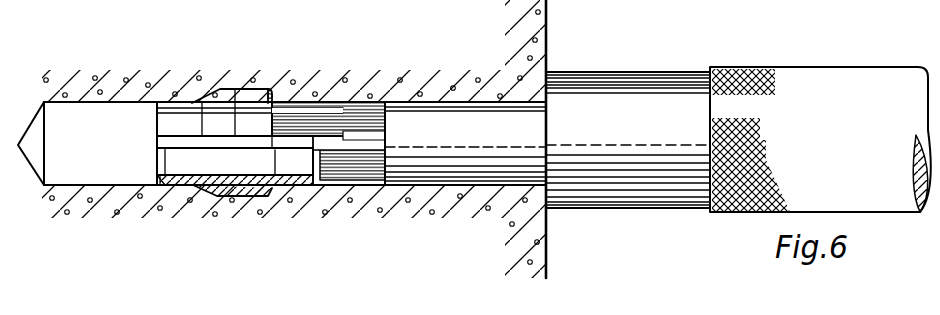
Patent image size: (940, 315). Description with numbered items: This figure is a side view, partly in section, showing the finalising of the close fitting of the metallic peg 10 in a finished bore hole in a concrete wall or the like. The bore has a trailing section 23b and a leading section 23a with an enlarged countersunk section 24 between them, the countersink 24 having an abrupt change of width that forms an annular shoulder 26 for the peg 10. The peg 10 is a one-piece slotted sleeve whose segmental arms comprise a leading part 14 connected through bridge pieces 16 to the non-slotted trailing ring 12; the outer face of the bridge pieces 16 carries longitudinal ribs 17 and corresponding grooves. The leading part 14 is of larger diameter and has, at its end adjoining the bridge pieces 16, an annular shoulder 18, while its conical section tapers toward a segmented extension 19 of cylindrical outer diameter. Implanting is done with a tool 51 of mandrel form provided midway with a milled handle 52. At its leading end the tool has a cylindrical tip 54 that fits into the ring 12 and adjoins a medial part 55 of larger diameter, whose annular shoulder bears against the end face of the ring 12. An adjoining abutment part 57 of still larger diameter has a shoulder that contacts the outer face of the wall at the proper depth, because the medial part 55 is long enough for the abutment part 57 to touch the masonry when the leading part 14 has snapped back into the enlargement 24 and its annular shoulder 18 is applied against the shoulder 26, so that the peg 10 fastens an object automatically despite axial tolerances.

The metallic peg 10 is at (332, 96).
The ring 12 is at (384, 101).
The leading part 14 is at (230, 84).
The bridge pieces 16 is at (308, 143).
The longitudinal ribs 17 is at (363, 120).
The annular shoulder 18 is at (270, 90).
The segmented extension 19 is at (165, 118).
The leading section of bore hole 23a is at (448, 106).
The trailing section of bore hole 23b is at (78, 104).
The countersunk section 24 is at (230, 198).
The annular shoulder of bore 26 is at (242, 92).
The tool 51 is at (664, 70).
The milled handle 52 is at (752, 96).
The cylindrical tip 54 is at (364, 158).
The medial part 55 is at (442, 162).
The abutment part 57 is at (608, 96).